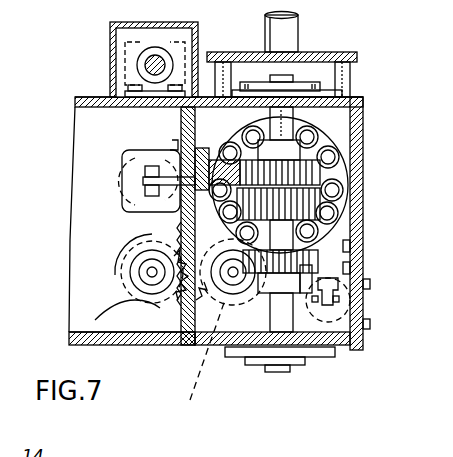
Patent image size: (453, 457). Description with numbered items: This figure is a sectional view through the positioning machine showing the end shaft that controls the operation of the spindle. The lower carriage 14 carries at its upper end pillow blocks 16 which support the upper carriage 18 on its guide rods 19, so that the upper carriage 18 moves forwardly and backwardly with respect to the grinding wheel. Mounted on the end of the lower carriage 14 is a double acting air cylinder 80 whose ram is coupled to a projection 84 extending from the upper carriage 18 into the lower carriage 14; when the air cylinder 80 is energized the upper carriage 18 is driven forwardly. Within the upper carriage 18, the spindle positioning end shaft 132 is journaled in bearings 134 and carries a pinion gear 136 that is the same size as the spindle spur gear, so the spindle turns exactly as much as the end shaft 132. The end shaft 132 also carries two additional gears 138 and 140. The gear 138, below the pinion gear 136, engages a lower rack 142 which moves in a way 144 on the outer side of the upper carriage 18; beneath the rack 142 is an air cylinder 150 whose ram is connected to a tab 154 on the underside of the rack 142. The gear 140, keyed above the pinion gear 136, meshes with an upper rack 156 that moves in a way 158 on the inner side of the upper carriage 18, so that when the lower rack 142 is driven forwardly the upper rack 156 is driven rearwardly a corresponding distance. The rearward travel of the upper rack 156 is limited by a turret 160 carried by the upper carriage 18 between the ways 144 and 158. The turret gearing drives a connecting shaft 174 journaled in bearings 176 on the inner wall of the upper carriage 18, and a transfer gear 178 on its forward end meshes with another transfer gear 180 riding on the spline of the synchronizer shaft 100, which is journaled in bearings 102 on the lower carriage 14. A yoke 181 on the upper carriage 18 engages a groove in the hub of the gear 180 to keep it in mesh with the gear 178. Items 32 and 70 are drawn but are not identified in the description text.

The lower carriage 14 is at (66, 134).
The pillow blocks 16 is at (200, 52).
The upper carriage 18 is at (366, 109).
The guide rods 19 is at (148, 64).
The shaft 32 is at (290, 31).
The rotor 70 is at (333, 157).
The air cylinder 80 is at (122, 165).
The projection 84 is at (150, 180).
The synchronizer shaft 100 is at (150, 272).
The bearings 102 is at (165, 248).
The spindle positioning end shaft 132 is at (287, 330).
The bearings 134 is at (305, 82).
The pinion gear 136 is at (318, 203).
The gear 138 is at (274, 280).
The gear 140 is at (312, 178).
The rack 142 is at (333, 265).
The way 144 is at (350, 248).
The air cylinder 150 is at (365, 309).
The tab 154 is at (340, 292).
The rack 156 is at (228, 150).
The way 158 is at (199, 158).
The turret 160 is at (333, 136).
The connecting shaft 174 is at (243, 280).
The bearings 176 is at (178, 345).
The transfer gear 178 is at (200, 313).
The transfer gear 180 is at (110, 311).
The yoke 181 is at (190, 363).